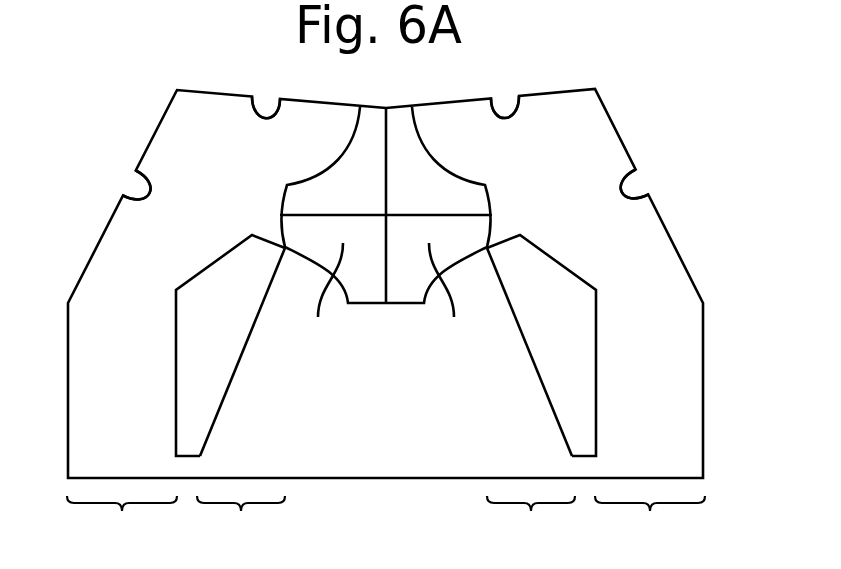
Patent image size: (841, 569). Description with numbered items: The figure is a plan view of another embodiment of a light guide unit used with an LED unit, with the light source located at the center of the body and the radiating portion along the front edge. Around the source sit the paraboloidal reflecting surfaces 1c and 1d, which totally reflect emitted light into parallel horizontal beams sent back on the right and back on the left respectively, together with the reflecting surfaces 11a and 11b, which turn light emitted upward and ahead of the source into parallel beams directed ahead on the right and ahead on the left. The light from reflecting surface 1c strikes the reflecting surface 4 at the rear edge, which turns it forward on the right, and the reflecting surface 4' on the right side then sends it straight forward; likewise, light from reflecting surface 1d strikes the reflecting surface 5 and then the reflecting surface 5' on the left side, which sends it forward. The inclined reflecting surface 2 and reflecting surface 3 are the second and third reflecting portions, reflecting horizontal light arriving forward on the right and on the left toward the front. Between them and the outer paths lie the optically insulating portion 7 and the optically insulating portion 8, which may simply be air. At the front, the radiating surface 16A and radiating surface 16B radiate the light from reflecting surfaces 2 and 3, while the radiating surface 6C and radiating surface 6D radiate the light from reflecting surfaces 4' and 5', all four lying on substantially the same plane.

The reflecting surface 5 is at (233, 80).
The reflecting surface 4 is at (535, 79).
The reflecting surface 5' is at (86, 205).
The reflecting surface 4' is at (686, 204).
The reflecting surface 1d is at (375, 204).
The reflecting surface 1c is at (445, 204).
The reflecting surface 11b is at (323, 304).
The reflecting surface 11a is at (453, 304).
The optically insulating portion 8 is at (220, 360).
The optically insulating portion 7 is at (552, 358).
The reflecting surface 3 is at (230, 383).
The reflecting surface 2 is at (542, 380).
The radiating surface 6D is at (122, 529).
The radiating surface 16B is at (241, 529).
The radiating surface 16A is at (531, 529).
The radiating surface 6C is at (650, 529).